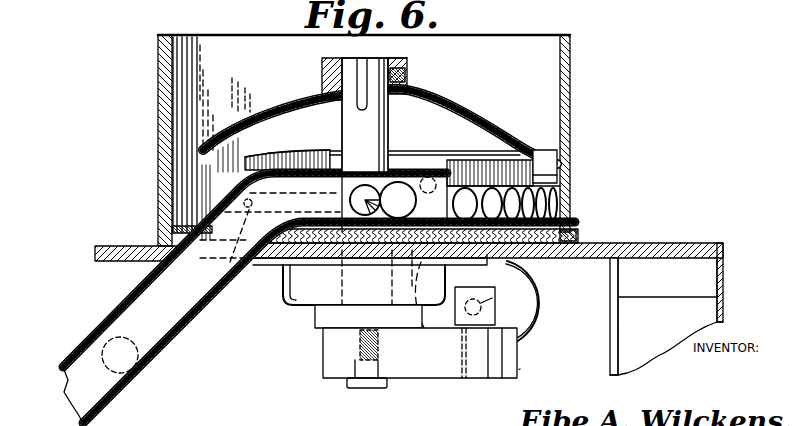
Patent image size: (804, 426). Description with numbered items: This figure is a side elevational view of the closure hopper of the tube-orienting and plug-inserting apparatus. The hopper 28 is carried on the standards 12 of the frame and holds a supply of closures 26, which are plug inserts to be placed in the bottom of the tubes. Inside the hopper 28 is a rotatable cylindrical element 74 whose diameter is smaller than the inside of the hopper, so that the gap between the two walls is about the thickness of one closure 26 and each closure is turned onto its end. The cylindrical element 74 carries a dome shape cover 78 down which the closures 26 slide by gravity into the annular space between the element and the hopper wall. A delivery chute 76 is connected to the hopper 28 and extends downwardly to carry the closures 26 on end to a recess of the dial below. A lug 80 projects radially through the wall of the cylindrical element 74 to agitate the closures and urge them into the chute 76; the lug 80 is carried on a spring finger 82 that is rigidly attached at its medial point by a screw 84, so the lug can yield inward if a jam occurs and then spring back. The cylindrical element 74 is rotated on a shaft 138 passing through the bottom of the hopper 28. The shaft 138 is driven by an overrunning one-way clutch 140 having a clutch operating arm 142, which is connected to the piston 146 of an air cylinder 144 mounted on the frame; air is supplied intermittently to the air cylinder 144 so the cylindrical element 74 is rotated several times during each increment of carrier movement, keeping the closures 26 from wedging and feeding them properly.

The standard 12 is at (723, 266).
The closure 26 is at (556, 202).
The hopper 28 is at (572, 80).
The rotatable cylindrical element 74 is at (572, 139).
The delivery chute 76 is at (164, 351).
The dome shape cover 78 is at (465, 111).
The lug 80 is at (363, 195).
The spring finger 82 is at (307, 194).
The screw 84 is at (283, 282).
The shaft 138 is at (322, 104).
The overrunning one-way clutch 140 is at (323, 353).
The clutch operating arm 142 is at (428, 378).
The air cylinder 144 is at (537, 312).
The piston 146 is at (483, 300).